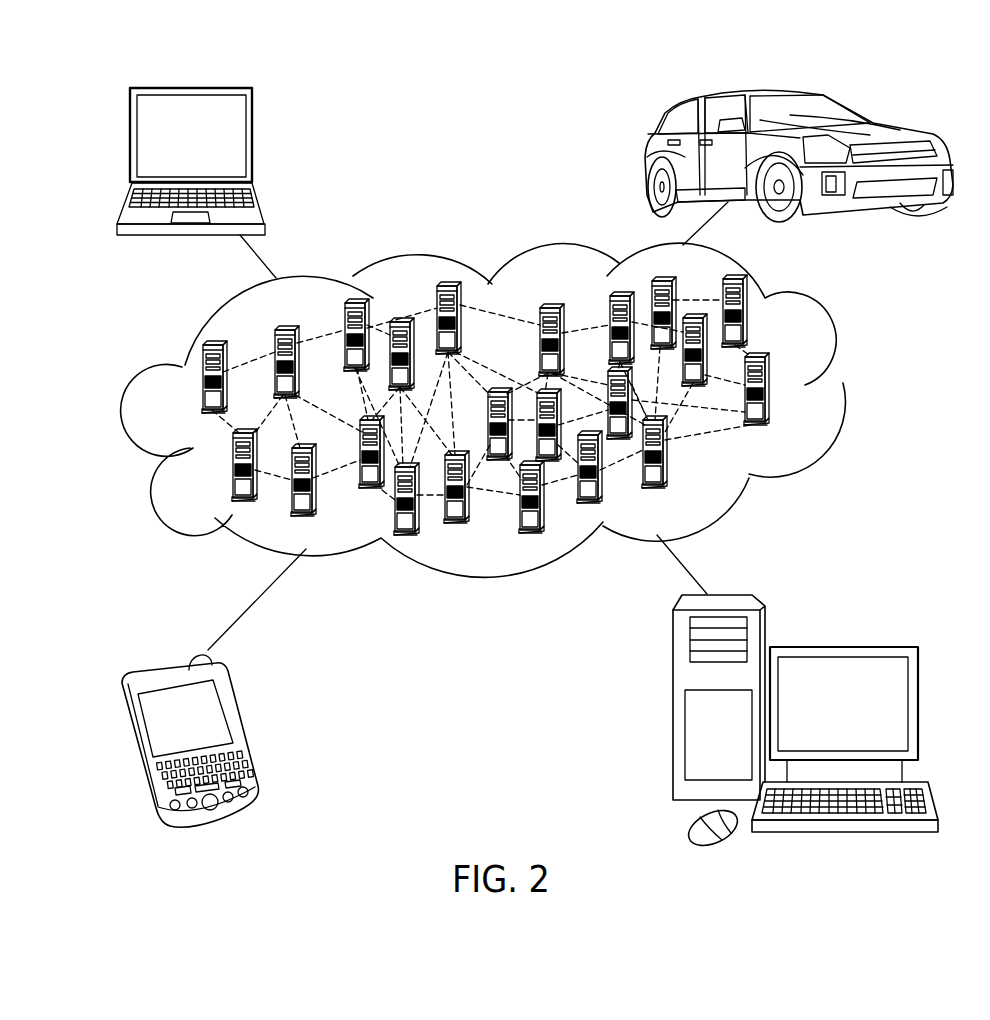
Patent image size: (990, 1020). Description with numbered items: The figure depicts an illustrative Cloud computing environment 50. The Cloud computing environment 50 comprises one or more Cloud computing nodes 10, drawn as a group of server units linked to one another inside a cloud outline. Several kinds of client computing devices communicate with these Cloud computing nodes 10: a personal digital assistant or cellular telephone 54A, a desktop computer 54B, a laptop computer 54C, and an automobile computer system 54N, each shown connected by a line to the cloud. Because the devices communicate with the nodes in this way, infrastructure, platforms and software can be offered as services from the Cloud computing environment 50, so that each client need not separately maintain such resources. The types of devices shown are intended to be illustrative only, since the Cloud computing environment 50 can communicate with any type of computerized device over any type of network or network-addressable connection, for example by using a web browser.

The Cloud computing node 10 is at (798, 419).
The Cloud computing environment 50 is at (505, 433).
The personal digital assistant (PDA) or cellular telephone 54A is at (244, 731).
The desktop computer 54B is at (841, 647).
The laptop computer 54C is at (252, 143).
The automobile computer system 54N is at (647, 156).